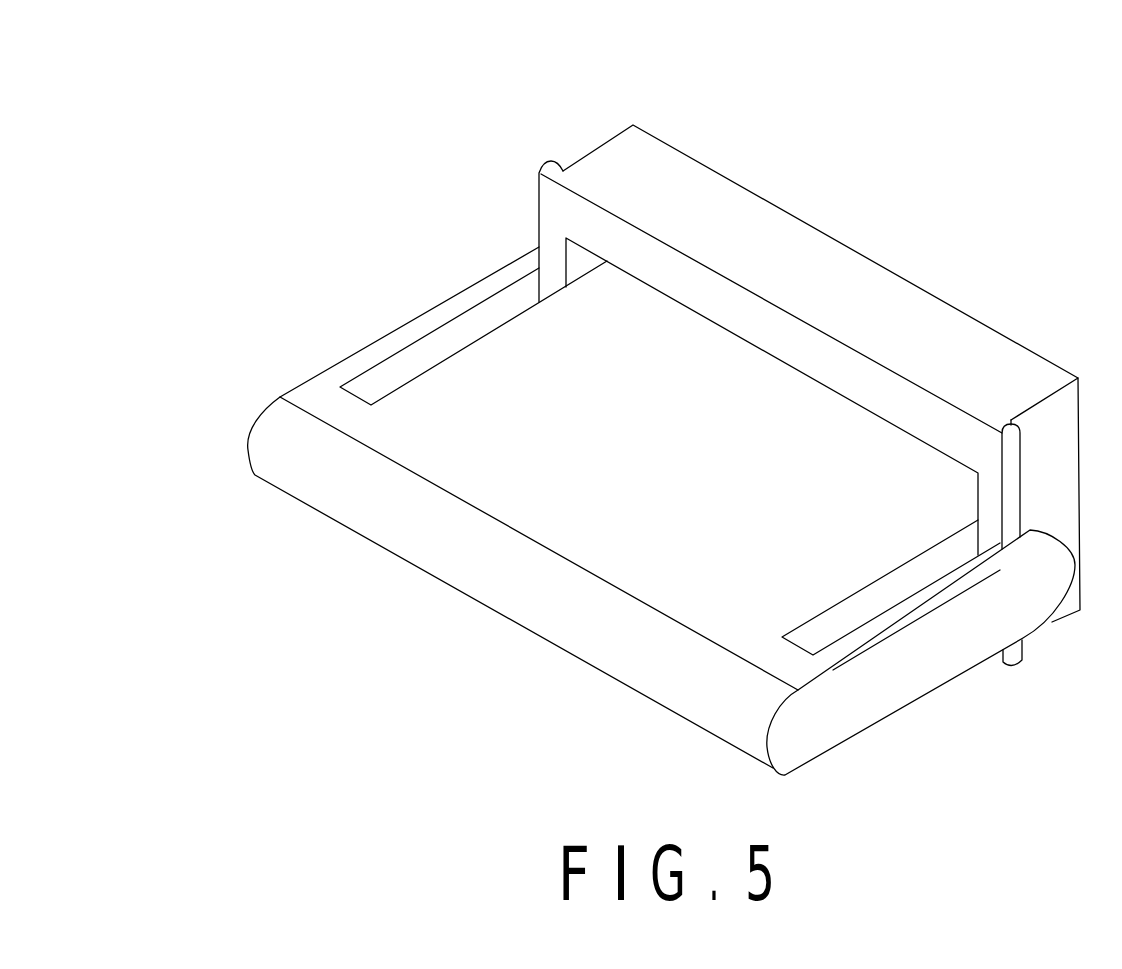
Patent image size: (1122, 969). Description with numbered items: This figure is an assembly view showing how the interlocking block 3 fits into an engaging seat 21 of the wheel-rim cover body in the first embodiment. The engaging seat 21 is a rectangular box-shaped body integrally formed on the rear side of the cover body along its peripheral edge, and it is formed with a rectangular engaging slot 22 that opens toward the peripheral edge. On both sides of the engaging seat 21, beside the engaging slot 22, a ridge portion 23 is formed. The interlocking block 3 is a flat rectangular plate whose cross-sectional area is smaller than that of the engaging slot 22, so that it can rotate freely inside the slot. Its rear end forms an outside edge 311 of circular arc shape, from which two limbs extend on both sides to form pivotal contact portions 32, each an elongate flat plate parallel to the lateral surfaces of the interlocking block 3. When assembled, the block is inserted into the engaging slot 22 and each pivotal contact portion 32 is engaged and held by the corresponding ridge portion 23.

The engaging seat 21 is at (847, 246).
The engaging slot 22 is at (583, 269).
The ridge portion 23 is at (540, 163).
The interlocking block 3 is at (470, 397).
The outside edge 311 is at (490, 608).
The pivotal contact portion 32 is at (920, 665).